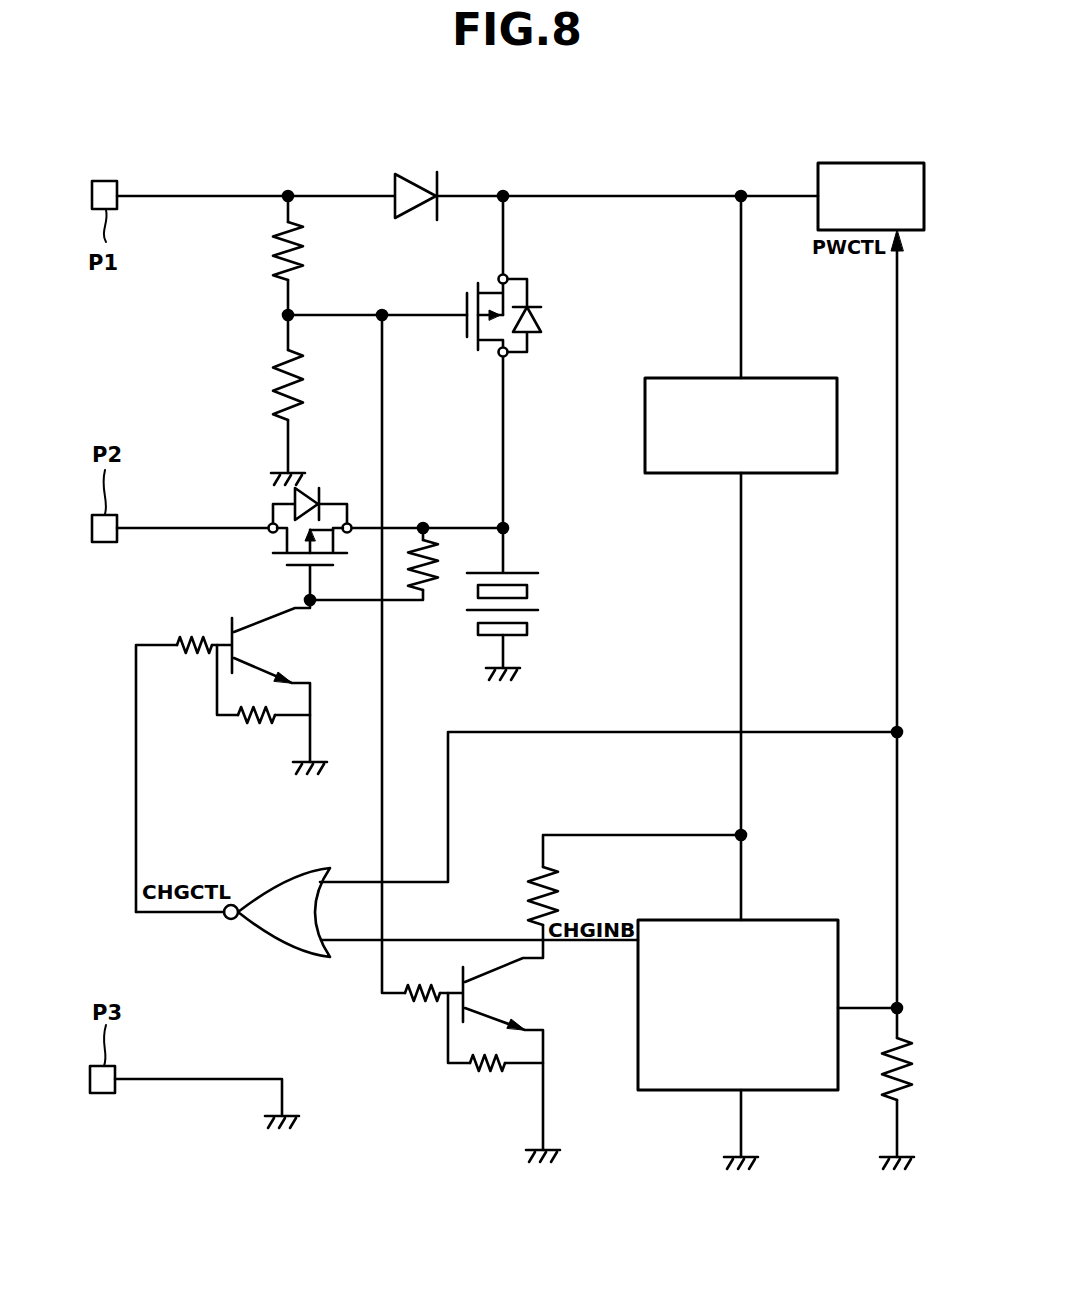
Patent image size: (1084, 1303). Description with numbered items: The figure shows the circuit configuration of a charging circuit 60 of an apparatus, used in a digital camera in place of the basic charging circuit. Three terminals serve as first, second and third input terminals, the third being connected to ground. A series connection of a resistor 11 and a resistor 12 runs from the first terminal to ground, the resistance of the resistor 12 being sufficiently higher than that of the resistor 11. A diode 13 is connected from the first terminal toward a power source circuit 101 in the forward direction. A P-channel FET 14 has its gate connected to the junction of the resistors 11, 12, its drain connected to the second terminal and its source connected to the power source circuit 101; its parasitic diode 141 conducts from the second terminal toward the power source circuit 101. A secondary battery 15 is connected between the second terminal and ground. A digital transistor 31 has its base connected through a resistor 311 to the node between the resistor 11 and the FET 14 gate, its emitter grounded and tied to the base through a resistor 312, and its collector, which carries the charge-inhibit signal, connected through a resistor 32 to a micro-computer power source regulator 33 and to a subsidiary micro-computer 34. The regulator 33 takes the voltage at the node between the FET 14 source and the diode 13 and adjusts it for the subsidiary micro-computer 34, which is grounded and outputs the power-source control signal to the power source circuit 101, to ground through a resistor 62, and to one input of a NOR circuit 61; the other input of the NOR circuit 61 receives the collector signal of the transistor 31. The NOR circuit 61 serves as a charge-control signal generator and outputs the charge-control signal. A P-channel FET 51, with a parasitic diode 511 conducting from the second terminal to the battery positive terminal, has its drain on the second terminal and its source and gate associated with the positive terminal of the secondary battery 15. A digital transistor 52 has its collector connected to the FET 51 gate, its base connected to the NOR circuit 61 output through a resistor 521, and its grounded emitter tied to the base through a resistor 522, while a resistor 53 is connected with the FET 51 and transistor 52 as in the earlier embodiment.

The charging circuit of an apparatus 60 is at (572, 162).
The resistor 11 is at (276, 255).
The resistor 12 is at (273, 395).
The diode 13 is at (410, 172).
The FET 14 is at (465, 301).
The parasitic diode 141 is at (537, 336).
The secondary battery 15 is at (523, 572).
The power source circuit 101 is at (818, 183).
The micro-computer power source regulator 33 is at (790, 378).
The subsidiary micro-computer 34 is at (795, 920).
The FET 51 is at (297, 568).
The parasitic diode 511 is at (305, 488).
The digital transistor 52 is at (232, 622).
The resistor 521 is at (172, 630).
The resistor 522 is at (240, 722).
The resistor 53 is at (432, 582).
The NOR circuit 61 is at (303, 866).
The resistor 62 is at (890, 1097).
The digital transistor 31 is at (460, 978).
The resistor 311 is at (418, 999).
The resistor 312 is at (498, 1076).
The resistor 32 is at (542, 875).